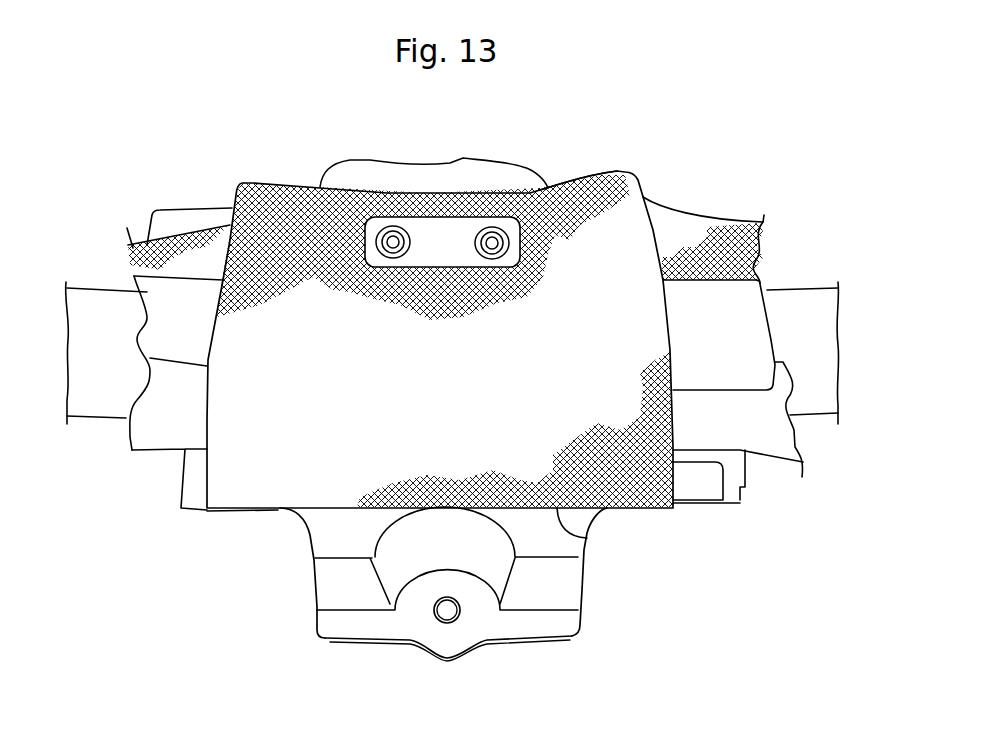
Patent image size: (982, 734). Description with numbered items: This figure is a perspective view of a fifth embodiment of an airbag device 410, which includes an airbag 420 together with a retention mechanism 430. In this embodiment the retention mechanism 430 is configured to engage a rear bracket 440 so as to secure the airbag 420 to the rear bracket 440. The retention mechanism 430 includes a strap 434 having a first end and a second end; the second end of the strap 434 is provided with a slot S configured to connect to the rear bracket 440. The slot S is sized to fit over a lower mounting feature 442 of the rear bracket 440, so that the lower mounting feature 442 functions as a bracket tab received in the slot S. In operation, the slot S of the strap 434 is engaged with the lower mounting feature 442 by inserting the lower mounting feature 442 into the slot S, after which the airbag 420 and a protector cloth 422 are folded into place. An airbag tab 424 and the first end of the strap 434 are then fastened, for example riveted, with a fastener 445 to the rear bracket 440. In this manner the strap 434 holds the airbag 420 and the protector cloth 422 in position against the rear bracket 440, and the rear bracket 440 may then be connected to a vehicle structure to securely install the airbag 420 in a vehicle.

The airbag device 410 is at (442, 379).
The airbag 420 is at (98, 298).
The protector cloth 422 is at (160, 384).
The airbag tab 424 is at (462, 162).
The retention mechanism 430 is at (238, 524).
The strap 434 is at (607, 240).
The rear bracket 440 is at (473, 595).
The lower mounting feature 442 is at (522, 630).
The fastener 445 is at (393, 240).
The slot S is at (587, 538).